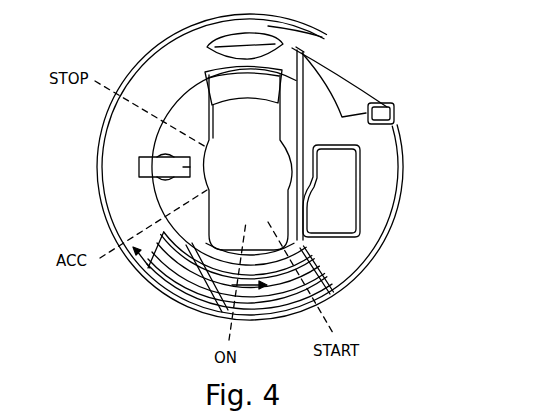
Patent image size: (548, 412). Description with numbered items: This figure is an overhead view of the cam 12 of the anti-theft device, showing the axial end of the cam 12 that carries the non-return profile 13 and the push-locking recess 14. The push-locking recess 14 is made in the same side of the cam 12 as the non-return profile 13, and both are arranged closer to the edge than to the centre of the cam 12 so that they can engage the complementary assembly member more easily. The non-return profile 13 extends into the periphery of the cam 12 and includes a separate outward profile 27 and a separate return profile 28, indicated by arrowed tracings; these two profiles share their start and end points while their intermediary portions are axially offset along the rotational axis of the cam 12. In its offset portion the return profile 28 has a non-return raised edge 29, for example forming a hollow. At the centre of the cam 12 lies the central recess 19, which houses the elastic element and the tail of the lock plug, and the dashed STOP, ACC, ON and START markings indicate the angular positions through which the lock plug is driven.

The cam 12 is at (405, 107).
The non-return profile 13 is at (158, 299).
The push-locking recess 14 is at (139, 162).
The central recess 19 is at (212, 138).
The outward profile 27 is at (195, 292).
The return profile 28 is at (143, 273).
The non-return raised edge 29 is at (197, 312).